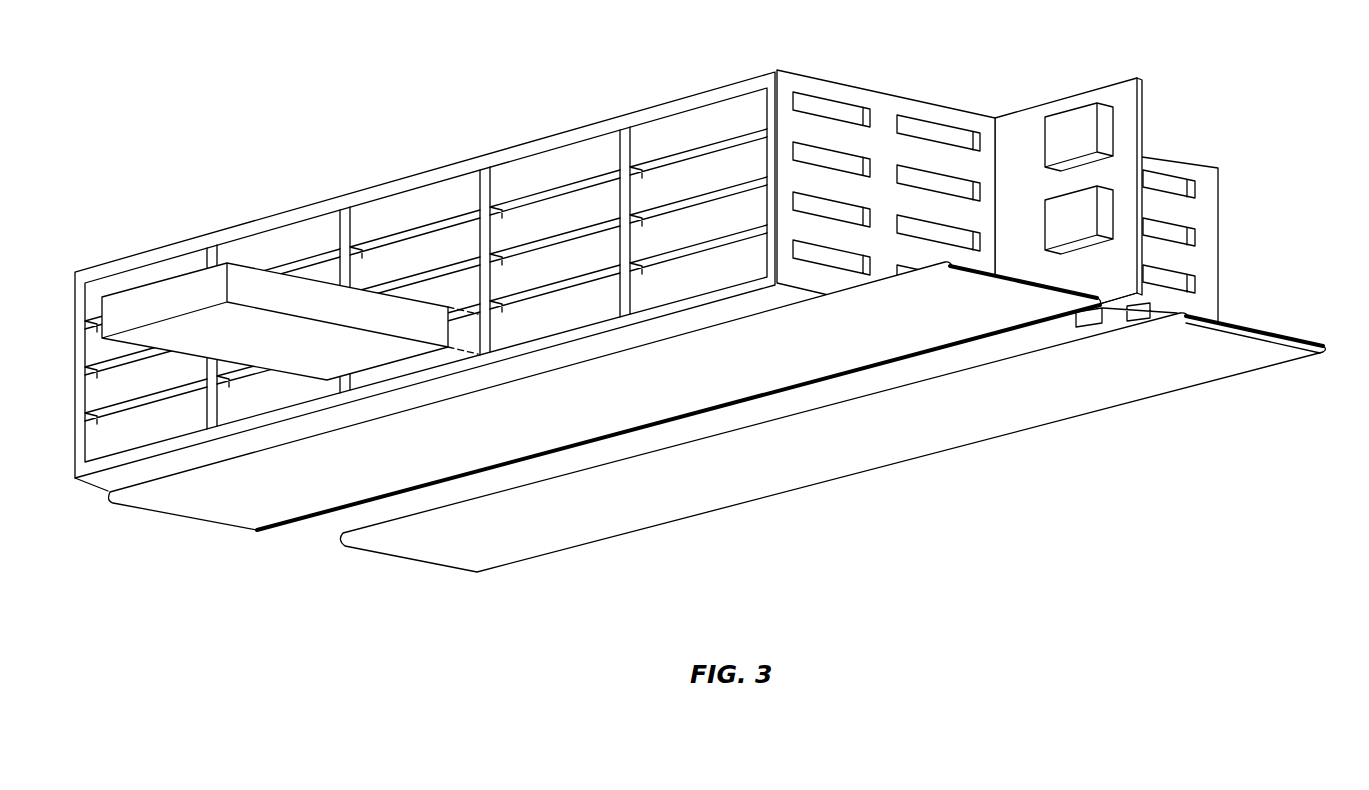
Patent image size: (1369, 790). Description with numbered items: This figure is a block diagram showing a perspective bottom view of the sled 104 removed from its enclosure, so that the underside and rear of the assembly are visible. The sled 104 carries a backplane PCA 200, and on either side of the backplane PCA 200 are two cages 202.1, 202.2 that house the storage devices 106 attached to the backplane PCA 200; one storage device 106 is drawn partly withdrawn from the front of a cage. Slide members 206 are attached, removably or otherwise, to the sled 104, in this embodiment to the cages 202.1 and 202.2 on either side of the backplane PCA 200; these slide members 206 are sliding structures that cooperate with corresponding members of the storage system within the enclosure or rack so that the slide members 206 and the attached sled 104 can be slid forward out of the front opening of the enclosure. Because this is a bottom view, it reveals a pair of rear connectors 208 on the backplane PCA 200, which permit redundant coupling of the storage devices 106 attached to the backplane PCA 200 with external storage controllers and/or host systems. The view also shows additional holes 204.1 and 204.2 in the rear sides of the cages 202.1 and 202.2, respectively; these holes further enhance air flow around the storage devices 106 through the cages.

The sled 104 is at (398, 104).
The storage devices 106 is at (183, 291).
The backplane PCA 200 is at (1028, 118).
The cage 202.1 is at (783, 90).
The cage 202.2 is at (1213, 178).
The holes 204.1 is at (942, 167).
The holes 204.2 is at (1203, 290).
The slide members 206 is at (188, 505).
The rear connectors 208 is at (1104, 213).